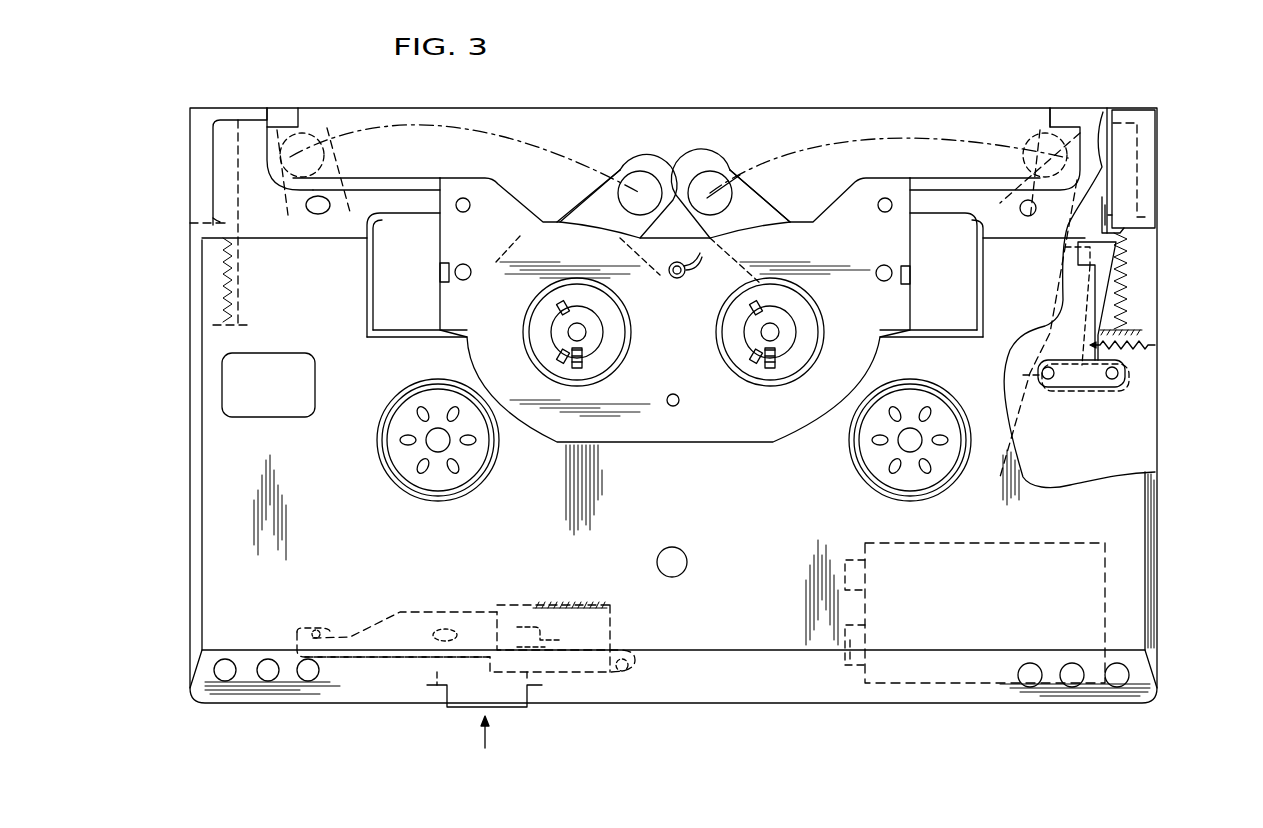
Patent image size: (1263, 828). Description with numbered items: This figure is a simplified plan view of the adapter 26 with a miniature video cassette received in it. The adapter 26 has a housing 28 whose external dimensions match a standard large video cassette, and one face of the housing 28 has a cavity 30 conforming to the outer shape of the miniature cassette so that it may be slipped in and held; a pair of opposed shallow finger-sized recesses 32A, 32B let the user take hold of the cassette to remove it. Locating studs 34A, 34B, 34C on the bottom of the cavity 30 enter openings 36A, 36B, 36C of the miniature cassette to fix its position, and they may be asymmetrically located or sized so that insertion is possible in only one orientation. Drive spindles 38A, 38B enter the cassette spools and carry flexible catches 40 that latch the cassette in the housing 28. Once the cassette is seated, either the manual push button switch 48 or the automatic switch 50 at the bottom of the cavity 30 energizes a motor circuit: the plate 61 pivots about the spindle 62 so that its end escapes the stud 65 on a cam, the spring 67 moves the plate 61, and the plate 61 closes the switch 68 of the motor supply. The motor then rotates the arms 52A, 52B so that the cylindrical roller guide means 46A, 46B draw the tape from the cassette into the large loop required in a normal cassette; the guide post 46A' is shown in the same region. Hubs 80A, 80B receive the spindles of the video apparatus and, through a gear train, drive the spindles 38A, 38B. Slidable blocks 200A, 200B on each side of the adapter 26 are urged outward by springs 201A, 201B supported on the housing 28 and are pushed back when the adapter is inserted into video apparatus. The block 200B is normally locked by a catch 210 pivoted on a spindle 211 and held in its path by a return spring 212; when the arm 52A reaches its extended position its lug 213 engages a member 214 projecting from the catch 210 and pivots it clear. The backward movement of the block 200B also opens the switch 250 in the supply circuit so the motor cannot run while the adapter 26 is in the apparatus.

The adapter 26 is at (786, 100).
The housing 28 is at (216, 548).
The cavity 30 is at (700, 442).
The finger-sized recess 32A is at (404, 305).
The finger-sized recess 32B is at (950, 305).
The locating stud 34A is at (480, 256).
The locating stud 34B is at (680, 402).
The locating stud 34C is at (880, 212).
The opening 36A is at (465, 281).
The opening 36B is at (666, 400).
The opening 36C is at (883, 282).
The drive spindle 38A is at (600, 340).
The drive spindle 38B is at (745, 345).
The flexible catch 40 is at (577, 348).
The tape guide post 46A' is at (716, 170).
The guide means 46A is at (700, 193).
The guide means 46B is at (640, 172).
The push button switch 48 is at (515, 709).
The switch 50 is at (675, 279).
The arm 52A is at (752, 210).
The arm 52B is at (570, 212).
The plate 61 is at (400, 610).
The spindle 62 is at (460, 612).
The stud 65 is at (315, 626).
The spring 67 is at (568, 600).
The switch 68 is at (540, 641).
The hub 80A is at (472, 462).
The hub 80B is at (872, 465).
The slidable block 200A is at (213, 152).
The slidable block 200B is at (1145, 168).
The spring 201A is at (236, 289).
The spring 201B is at (1128, 290).
The catch 210 is at (1095, 251).
The spindle 211 is at (1110, 383).
The return spring 212 is at (1128, 366).
The lug 213 is at (1068, 358).
The member 214 is at (1050, 382).
The switch 250 is at (1110, 216).